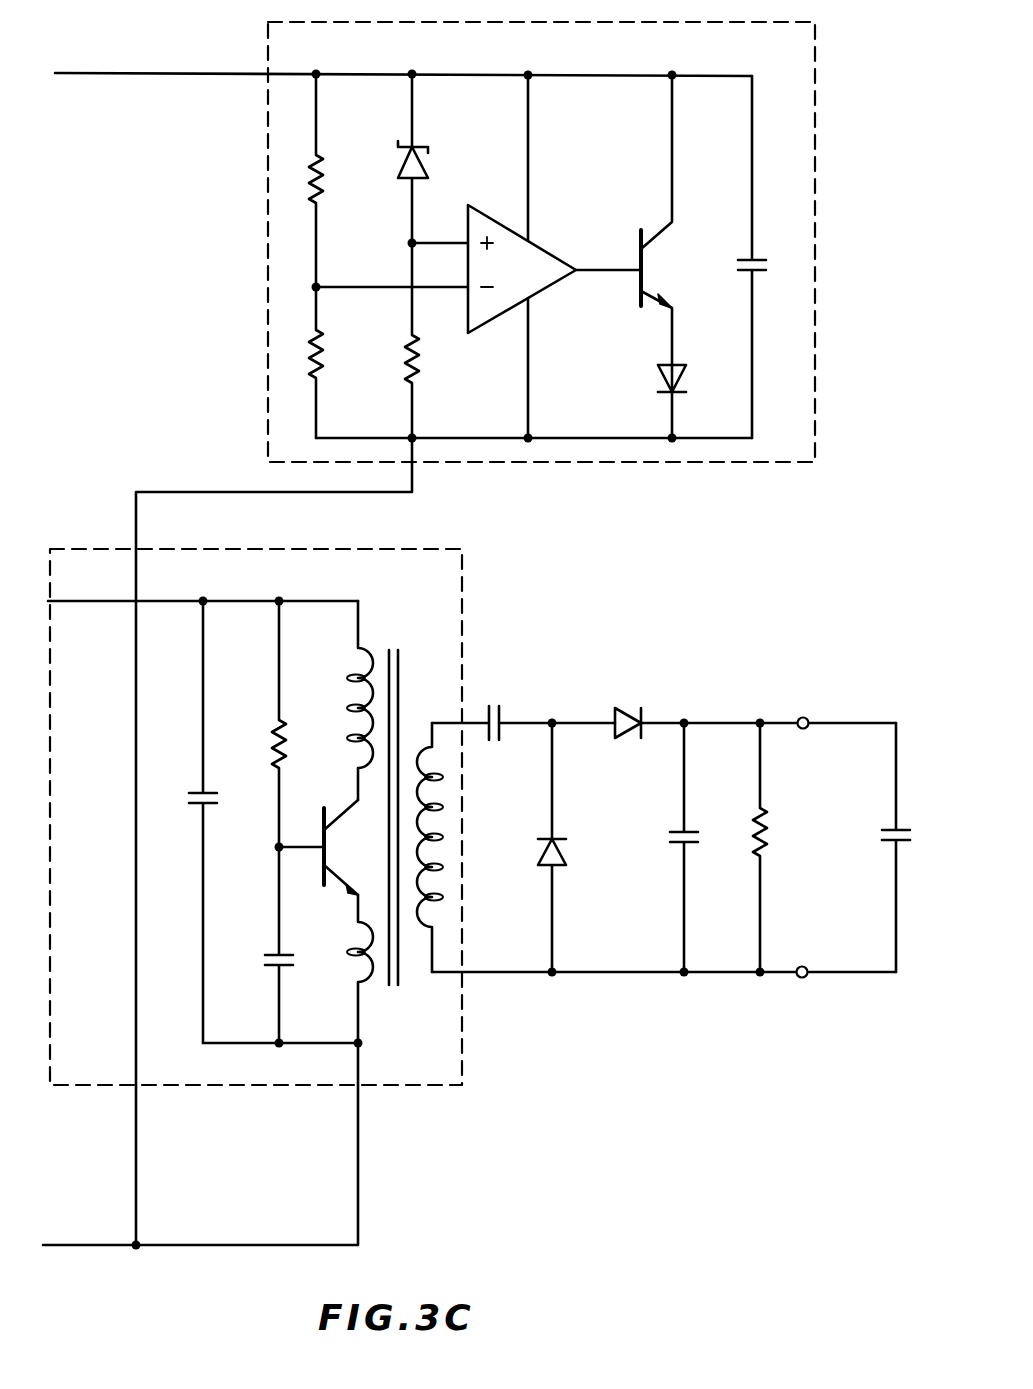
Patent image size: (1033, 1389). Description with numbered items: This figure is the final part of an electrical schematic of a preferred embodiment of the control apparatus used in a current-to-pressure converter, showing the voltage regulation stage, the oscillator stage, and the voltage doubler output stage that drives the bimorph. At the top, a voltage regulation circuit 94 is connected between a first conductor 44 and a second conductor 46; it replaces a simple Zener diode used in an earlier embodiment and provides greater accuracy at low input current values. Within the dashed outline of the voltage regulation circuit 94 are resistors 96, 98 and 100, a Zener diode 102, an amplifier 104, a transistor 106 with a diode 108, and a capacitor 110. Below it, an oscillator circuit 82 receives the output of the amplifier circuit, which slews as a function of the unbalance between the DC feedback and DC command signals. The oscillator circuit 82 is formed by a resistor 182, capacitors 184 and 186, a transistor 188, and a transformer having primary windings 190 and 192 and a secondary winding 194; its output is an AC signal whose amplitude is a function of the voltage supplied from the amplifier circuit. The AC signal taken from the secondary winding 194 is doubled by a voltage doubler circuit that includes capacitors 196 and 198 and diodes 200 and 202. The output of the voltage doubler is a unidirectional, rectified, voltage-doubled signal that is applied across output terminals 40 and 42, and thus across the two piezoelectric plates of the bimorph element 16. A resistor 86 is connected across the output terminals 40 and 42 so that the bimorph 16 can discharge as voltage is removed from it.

The bimorph 16 is at (914, 832).
The output terminal 40 is at (808, 717).
The output terminal 42 is at (801, 978).
The first conductor 44 is at (190, 74).
The second conductor 46 is at (213, 1250).
The oscillator circuit 82 is at (432, 1090).
The resistor 86 is at (764, 852).
The voltage regulation circuit 94 is at (815, 105).
The resistor 96 is at (309, 176).
The resistor 98 is at (322, 358).
The resistor 100 is at (419, 365).
The Zener diode 102 is at (424, 165).
The amplifier 104 is at (548, 248).
The transistor 106 is at (648, 258).
The diode 108 is at (655, 380).
The capacitor 110 is at (770, 268).
The resistor 182 is at (272, 732).
The capacitor 184 is at (188, 800).
The capacitor 186 is at (262, 958).
The transistor 188 is at (322, 870).
The primary winding 190 is at (350, 680).
The primary winding 192 is at (354, 958).
The secondary winding 194 is at (445, 837).
The capacitor 196 is at (494, 700).
The capacitor 198 is at (668, 840).
The diode 200 is at (562, 845).
The diode 202 is at (628, 713).